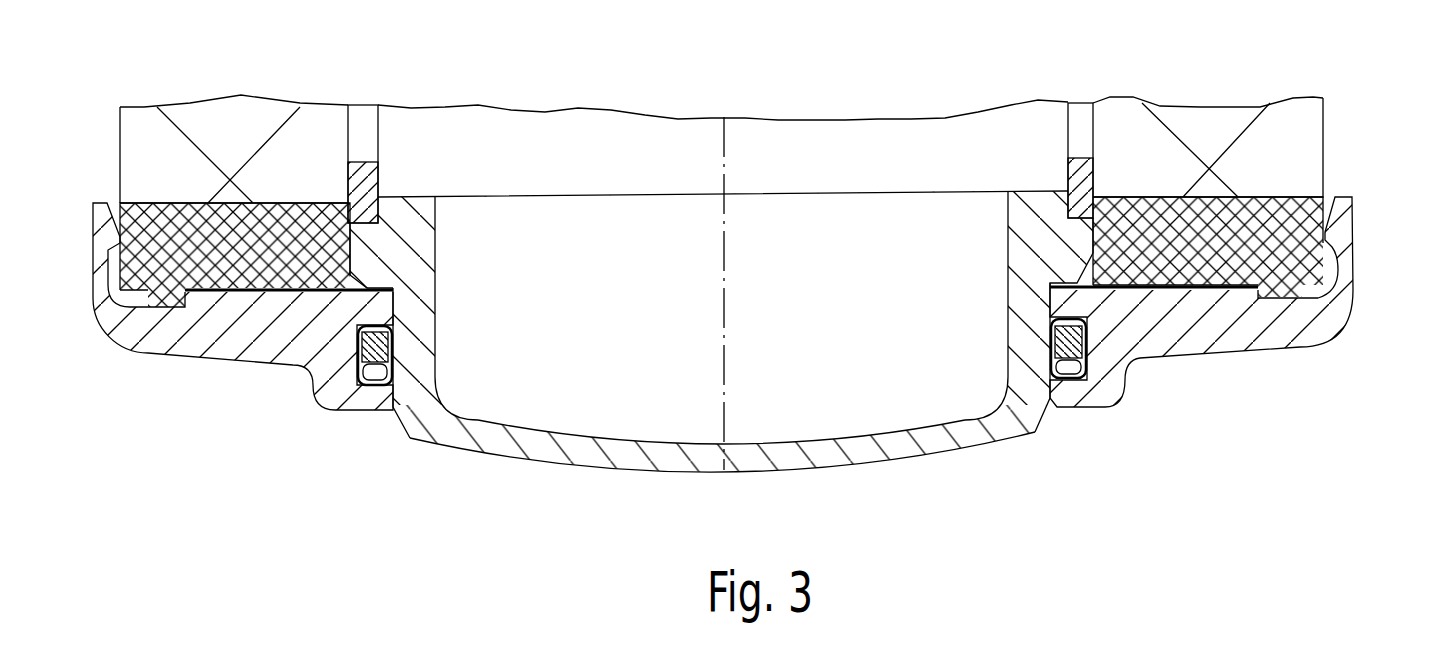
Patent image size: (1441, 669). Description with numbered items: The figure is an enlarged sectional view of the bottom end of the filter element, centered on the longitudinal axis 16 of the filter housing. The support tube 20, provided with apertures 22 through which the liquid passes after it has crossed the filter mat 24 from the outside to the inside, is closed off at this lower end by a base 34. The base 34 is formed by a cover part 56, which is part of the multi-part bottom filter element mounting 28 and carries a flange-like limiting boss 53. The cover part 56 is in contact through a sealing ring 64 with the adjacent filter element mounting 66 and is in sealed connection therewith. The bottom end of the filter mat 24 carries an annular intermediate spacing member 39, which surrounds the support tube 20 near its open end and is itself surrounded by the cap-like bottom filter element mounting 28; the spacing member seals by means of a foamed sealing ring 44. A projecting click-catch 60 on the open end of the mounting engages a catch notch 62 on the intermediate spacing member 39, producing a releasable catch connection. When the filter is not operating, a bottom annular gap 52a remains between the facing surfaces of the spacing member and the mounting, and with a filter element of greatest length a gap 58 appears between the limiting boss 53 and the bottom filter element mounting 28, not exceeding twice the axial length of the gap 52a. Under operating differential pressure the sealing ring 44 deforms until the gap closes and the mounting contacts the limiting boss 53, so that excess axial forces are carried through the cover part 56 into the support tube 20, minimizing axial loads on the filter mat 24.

The longitudinal axis 16 is at (724, 340).
The support tube 20 is at (378, 176).
The apertures 22 is at (366, 123).
The filter mat 24 is at (237, 126).
The bottom filter element mounting 28 is at (1257, 333).
The base 34 is at (591, 452).
The intermediate spacing member 39 is at (1210, 263).
The sealing ring 44 is at (1325, 335).
The bottom annular gap 52a is at (273, 297).
The limiting boss 53 is at (1058, 272).
The cover part 56 is at (928, 443).
The gap 58 is at (383, 285).
The click-catch 60 is at (102, 222).
The catch notch 62 is at (147, 205).
The sealing ring 64 is at (378, 367).
The filter element mounting 66 is at (208, 338).